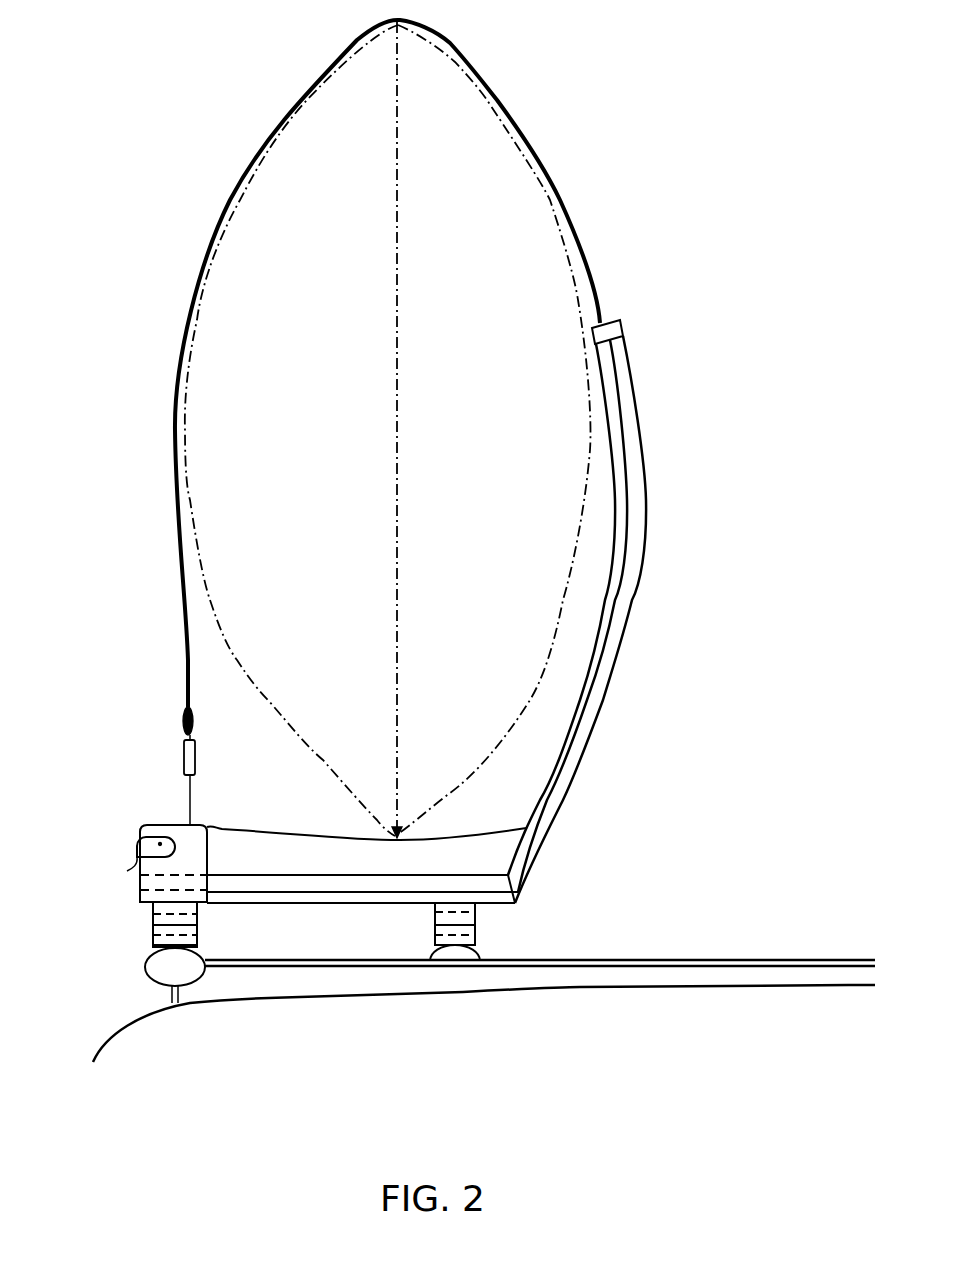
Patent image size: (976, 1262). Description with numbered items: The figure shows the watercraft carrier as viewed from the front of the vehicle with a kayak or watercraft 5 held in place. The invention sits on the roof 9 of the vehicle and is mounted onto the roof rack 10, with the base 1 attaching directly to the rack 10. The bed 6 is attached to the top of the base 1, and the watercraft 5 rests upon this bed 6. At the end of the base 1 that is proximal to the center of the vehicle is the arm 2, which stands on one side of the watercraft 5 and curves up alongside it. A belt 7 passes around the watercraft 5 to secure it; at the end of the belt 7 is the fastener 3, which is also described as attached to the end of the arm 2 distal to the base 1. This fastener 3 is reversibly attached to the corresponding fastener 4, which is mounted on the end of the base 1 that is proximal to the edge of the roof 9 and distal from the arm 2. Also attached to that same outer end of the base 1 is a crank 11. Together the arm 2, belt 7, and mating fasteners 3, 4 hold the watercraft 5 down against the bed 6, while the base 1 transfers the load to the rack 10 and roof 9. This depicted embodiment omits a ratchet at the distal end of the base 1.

The base 1 is at (278, 885).
The arm 2 is at (640, 552).
The fastener 3 is at (186, 718).
The corresponding fastener 4 is at (184, 756).
The watercraft 5 is at (550, 445).
The bed 6 is at (328, 842).
The belt 7 is at (200, 265).
The roof 9 is at (463, 993).
The roof rack 10 is at (146, 960).
The crank 11 is at (162, 836).